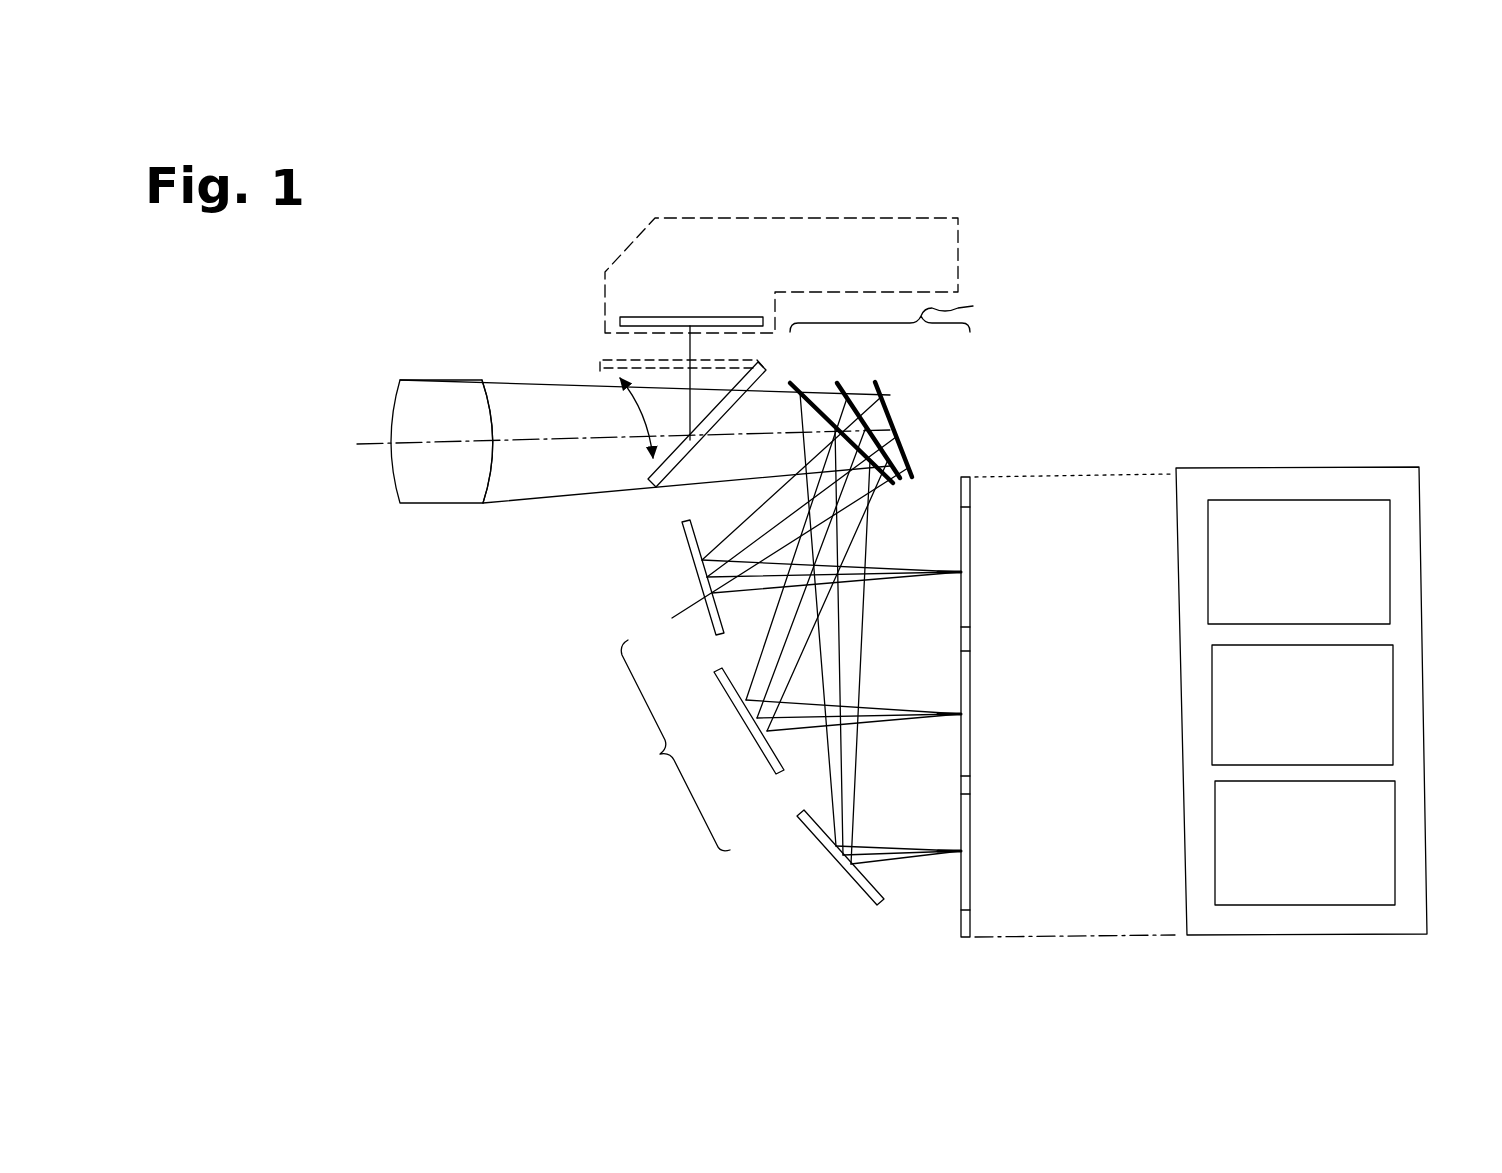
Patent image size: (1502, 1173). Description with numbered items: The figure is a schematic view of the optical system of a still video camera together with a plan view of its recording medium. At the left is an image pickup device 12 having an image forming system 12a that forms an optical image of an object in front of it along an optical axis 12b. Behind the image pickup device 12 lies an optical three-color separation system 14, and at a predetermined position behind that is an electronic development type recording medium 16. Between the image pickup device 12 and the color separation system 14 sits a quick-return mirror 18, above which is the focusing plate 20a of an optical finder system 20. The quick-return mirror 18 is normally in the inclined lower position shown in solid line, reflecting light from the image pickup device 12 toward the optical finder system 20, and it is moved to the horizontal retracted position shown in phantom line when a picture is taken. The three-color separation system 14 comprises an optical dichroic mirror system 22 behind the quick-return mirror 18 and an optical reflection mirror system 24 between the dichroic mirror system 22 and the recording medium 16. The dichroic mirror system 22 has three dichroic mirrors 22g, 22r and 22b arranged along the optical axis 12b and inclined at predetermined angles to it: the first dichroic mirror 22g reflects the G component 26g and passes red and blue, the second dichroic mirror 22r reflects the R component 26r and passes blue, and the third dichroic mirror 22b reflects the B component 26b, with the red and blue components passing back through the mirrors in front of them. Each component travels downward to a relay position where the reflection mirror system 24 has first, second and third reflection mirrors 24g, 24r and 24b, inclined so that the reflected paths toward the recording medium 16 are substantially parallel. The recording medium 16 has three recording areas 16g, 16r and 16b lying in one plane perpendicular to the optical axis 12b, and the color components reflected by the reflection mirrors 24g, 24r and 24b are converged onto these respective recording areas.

The image pickup device 12 is at (411, 333).
The image forming system 12a is at (465, 412).
The optical axis 12b is at (368, 443).
The optical three-color separation system 14 is at (936, 437).
The electronic development type recording medium 16 is at (965, 477).
The recording area for B component 16b is at (960, 531).
The recording area for R component 16r is at (960, 679).
The recording area for G component 16g is at (960, 827).
The quick-return mirror 18 is at (600, 363).
The optical finder system 20 is at (770, 213).
The focusing plate 20a is at (691, 346).
The optical dichroic mirror system 22 is at (899, 313).
The first dichroic mirror 22g is at (793, 382).
The second dichroic mirror 22r is at (843, 382).
The third dichroic mirror 22b is at (877, 383).
The optical reflection mirror system 24 is at (672, 745).
The third reflection mirror 24b is at (707, 587).
The second reflection mirror 24r is at (727, 698).
The first reflection mirror 24g is at (798, 821).
The B component 26b is at (886, 569).
The R component 26r is at (890, 712).
The G component 26g is at (888, 848).